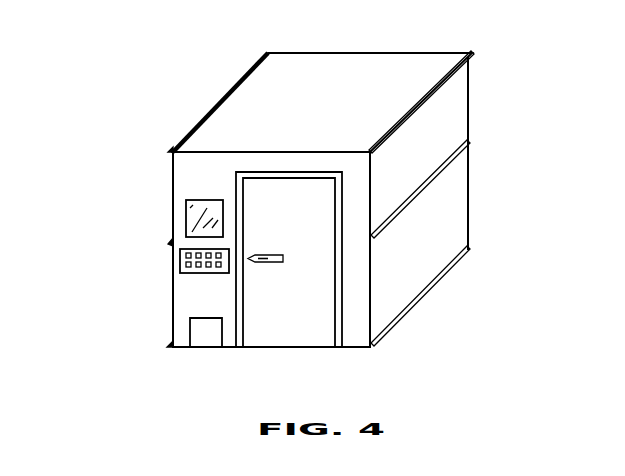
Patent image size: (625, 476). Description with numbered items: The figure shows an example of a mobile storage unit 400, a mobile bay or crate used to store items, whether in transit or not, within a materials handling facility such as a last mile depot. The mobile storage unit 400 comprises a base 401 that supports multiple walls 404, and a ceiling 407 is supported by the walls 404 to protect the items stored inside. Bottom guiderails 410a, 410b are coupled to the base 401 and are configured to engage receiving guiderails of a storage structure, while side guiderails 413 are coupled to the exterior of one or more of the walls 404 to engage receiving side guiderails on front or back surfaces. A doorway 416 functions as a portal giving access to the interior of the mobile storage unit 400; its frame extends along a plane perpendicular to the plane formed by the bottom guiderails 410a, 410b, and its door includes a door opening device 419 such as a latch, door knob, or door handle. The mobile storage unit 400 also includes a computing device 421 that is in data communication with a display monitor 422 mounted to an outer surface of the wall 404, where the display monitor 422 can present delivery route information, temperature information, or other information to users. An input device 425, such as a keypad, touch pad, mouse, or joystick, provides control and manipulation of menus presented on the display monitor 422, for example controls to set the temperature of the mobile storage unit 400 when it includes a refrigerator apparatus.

The mobile storage unit 400 is at (78, 396).
The base 401 is at (350, 348).
The walls 404 is at (293, 156).
The ceiling 407 is at (328, 54).
The bottom guiderail 410a is at (465, 256).
The bottom guiderail 410b is at (172, 347).
The side guiderails 413 is at (430, 178).
The doorway 416 is at (243, 295).
The door opening device 419 is at (283, 259).
The computing device 421 is at (218, 348).
The display monitor 422 is at (205, 199).
The input device 425 is at (203, 274).